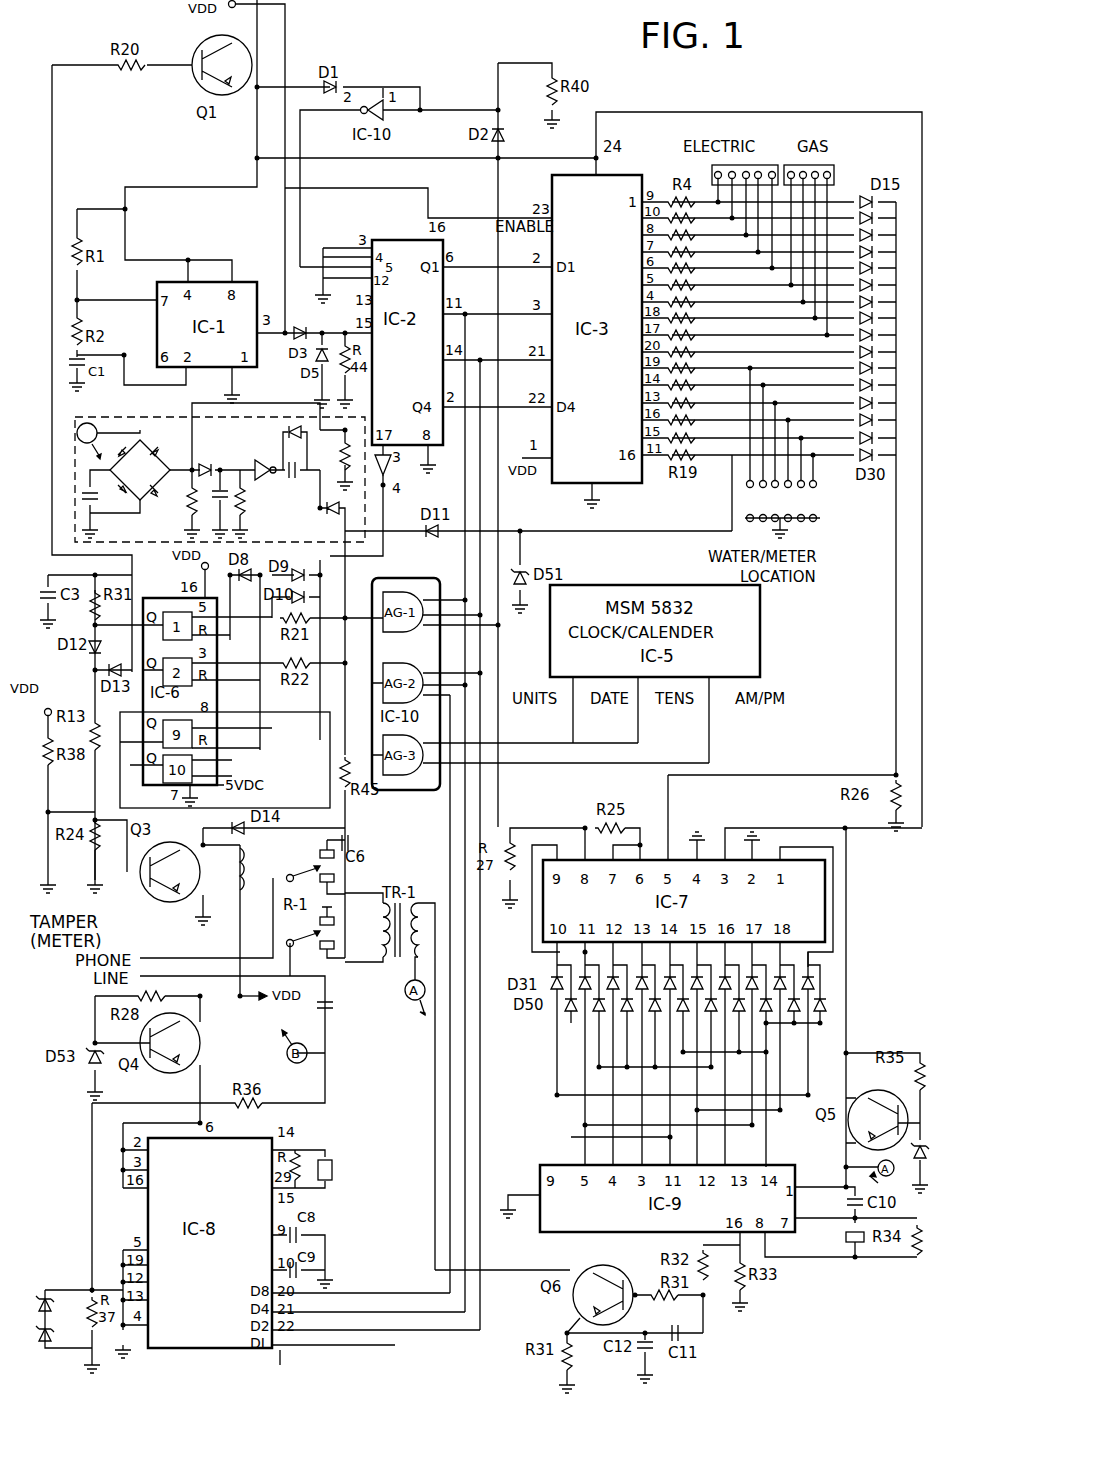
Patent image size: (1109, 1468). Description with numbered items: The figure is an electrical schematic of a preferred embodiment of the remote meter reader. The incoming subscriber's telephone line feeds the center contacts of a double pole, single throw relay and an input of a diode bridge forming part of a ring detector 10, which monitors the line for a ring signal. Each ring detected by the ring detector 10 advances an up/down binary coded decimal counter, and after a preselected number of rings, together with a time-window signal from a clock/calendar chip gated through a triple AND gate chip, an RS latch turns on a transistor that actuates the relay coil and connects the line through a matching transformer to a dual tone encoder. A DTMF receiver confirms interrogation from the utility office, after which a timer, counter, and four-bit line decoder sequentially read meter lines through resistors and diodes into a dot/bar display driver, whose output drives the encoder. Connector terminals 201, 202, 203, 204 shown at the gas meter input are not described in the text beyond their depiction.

The ring detector 10 is at (79, 433).
The gas meter connector terminal 201 is at (787, 165).
The gas meter connector terminal 202 is at (805, 171).
The gas meter connector terminal 203 is at (817, 172).
The gas meter connector terminal 204 is at (830, 171).